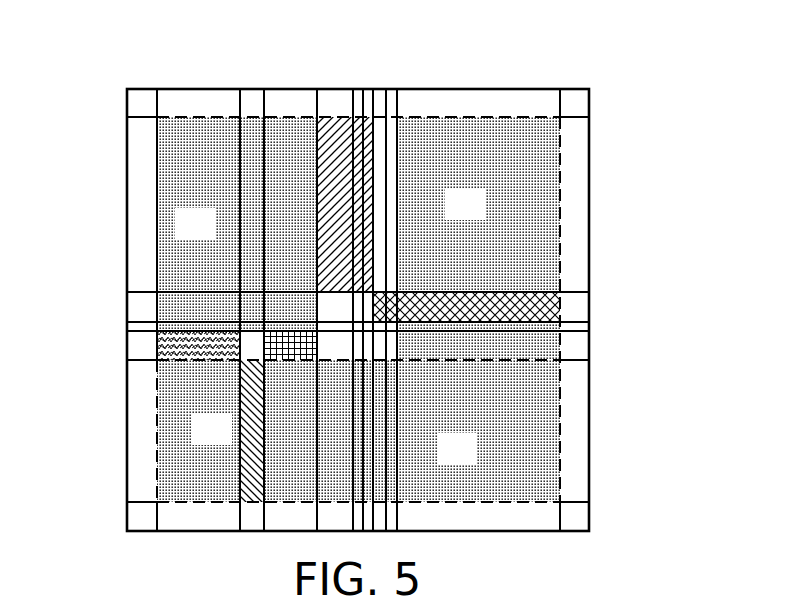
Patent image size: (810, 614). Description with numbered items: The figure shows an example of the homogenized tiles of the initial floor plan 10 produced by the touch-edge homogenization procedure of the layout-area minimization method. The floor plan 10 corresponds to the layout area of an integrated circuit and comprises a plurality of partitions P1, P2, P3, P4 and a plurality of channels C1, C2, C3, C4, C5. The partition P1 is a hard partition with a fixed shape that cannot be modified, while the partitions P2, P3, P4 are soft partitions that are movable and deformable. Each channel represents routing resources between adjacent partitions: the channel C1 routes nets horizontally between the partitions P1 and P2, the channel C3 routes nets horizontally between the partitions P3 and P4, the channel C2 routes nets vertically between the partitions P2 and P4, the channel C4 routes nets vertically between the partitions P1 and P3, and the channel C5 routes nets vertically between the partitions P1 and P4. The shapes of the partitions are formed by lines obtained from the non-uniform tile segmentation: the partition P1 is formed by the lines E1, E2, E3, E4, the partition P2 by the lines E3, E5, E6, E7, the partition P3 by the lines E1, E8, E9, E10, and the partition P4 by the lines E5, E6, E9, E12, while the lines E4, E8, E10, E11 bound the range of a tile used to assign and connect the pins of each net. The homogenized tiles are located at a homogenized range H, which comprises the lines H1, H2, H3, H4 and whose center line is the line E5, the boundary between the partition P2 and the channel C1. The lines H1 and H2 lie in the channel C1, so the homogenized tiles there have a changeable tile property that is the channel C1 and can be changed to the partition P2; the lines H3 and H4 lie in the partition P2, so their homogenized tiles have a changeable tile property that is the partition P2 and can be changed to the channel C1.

The initial floor plan 10 is at (677, 92).
The partition P1 is at (212, 238).
The partition P2 is at (482, 217).
The partition P3 is at (229, 443).
The partition P4 is at (474, 462).
The channel C1 is at (327, 165).
The channel C2 is at (545, 292).
The channel C3 is at (255, 500).
The channel C4 is at (170, 346).
The channel C5 is at (290, 333).
The line E1 is at (157, 108).
The line E2 is at (305, 108).
The line E3 is at (136, 121).
The line E4 is at (140, 337).
The line E5 is at (380, 516).
The line E6 is at (560, 108).
The line E7 is at (143, 291).
The line E8 is at (238, 107).
The line E9 is at (143, 505).
The line E10 is at (146, 364).
The line E11 is at (250, 103).
The line E12 is at (581, 314).
The homogenized range H is at (487, 52).
The line H1 is at (352, 105).
The line H2 is at (358, 100).
The line H3 is at (388, 102).
The line H4 is at (397, 105).